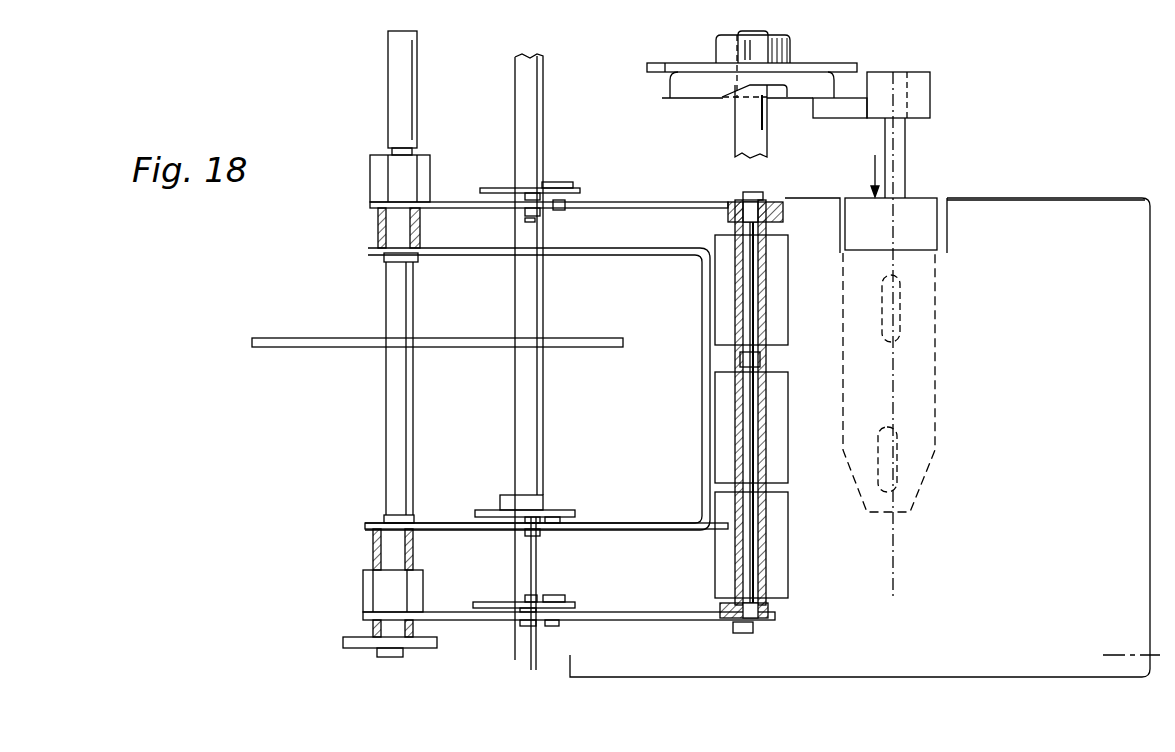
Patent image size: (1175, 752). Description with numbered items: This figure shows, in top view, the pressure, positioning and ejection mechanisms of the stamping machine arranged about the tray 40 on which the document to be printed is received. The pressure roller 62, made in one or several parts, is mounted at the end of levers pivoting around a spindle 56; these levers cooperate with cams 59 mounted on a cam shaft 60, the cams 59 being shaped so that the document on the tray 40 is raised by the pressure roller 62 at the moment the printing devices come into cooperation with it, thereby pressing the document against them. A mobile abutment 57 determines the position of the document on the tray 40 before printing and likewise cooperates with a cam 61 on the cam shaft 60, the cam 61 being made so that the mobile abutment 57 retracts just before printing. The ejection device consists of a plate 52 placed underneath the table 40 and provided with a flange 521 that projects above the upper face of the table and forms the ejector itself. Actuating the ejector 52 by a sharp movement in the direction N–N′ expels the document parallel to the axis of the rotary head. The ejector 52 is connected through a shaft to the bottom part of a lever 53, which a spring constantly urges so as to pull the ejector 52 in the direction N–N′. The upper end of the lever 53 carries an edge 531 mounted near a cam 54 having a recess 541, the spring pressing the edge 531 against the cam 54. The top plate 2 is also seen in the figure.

The top plate 2 is at (860, 70).
The tray 40 is at (1126, 216).
The ejector plate 52 is at (905, 212).
The flange 521 is at (868, 166).
The lever 53 is at (885, 80).
The edge 531 is at (842, 108).
The cam 54 is at (680, 88).
The recess 541 is at (777, 95).
The spindle 56 is at (390, 368).
The mobile abutment 57 is at (628, 250).
The cams 59 is at (490, 605).
The cam shaft 60 is at (520, 388).
The cam 61 is at (483, 512).
The pressure roller 62 is at (790, 387).